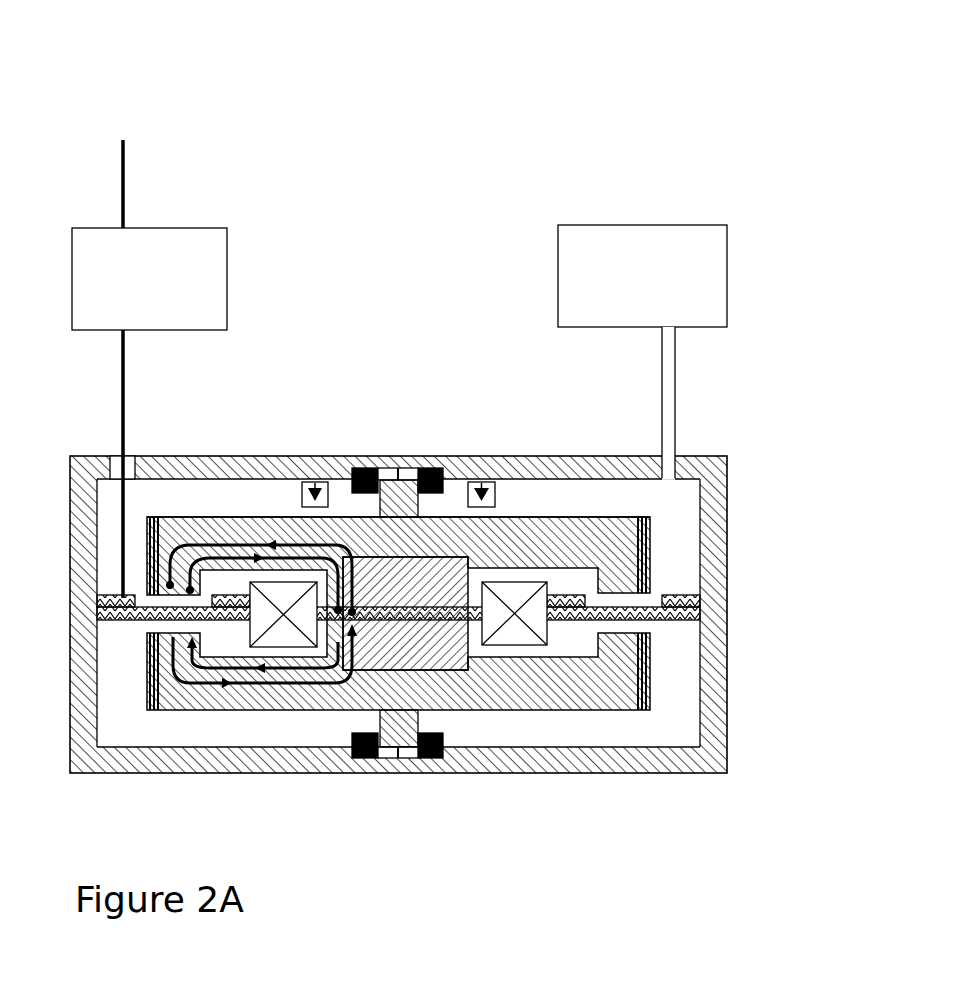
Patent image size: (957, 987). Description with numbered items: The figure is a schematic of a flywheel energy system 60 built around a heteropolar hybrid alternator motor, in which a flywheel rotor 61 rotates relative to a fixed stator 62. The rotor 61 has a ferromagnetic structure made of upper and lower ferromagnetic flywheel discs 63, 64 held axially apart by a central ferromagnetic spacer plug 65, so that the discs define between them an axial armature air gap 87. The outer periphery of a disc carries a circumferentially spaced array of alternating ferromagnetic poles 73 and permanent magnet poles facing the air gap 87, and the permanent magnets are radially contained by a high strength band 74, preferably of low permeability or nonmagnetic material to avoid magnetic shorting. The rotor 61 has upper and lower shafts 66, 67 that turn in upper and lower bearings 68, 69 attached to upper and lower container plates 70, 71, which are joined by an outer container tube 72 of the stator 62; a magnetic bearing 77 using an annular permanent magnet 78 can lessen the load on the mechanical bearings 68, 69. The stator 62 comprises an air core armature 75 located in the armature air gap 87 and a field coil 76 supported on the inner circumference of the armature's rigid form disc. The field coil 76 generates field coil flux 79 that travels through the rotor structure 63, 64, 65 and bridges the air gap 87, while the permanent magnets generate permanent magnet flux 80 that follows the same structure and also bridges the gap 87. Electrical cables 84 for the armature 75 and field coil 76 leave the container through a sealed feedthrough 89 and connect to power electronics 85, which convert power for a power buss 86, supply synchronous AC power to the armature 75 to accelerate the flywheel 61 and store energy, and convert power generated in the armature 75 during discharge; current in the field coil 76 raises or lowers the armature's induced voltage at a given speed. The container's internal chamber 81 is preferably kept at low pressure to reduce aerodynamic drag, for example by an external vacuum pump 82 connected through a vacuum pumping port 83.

The flywheel energy system 60 is at (157, 44).
The flywheel rotor 61 is at (585, 732).
The stator 62 is at (437, 612).
The upper ferromagnetic flywheel disc 63 is at (419, 615).
The lower ferromagnetic flywheel disc 64 is at (603, 517).
The central ferromagnetic spacer plug 65 is at (466, 652).
The upper shaft 66 is at (400, 467).
The lower shaft 67 is at (398, 760).
The upper bearing 68 is at (432, 468).
The lower bearing 69 is at (432, 760).
The upper container plate 70 is at (533, 460).
The lower container plate 71 is at (520, 772).
The outer container tube 72 is at (730, 510).
The ferromagnetic poles 73 is at (598, 643).
The high strength band 74 is at (652, 645).
The air core armature 75 is at (670, 595).
The field coil 76 is at (250, 641).
The magnetic bearing 77 is at (286, 507).
The annular permanent magnet 78 is at (299, 482).
The field coil flux 79 is at (242, 670).
The permanent magnet flux 80 is at (196, 683).
The internal chamber 81 is at (691, 491).
The external vacuum pump 82 is at (728, 290).
The vacuum pumping port 83 is at (677, 373).
The electrical cables 84 is at (125, 393).
The power electronics 85 is at (229, 287).
The power buss 86 is at (125, 178).
The axial armature air gap 87 is at (398, 607).
The sealed feedthrough 89 is at (118, 453).